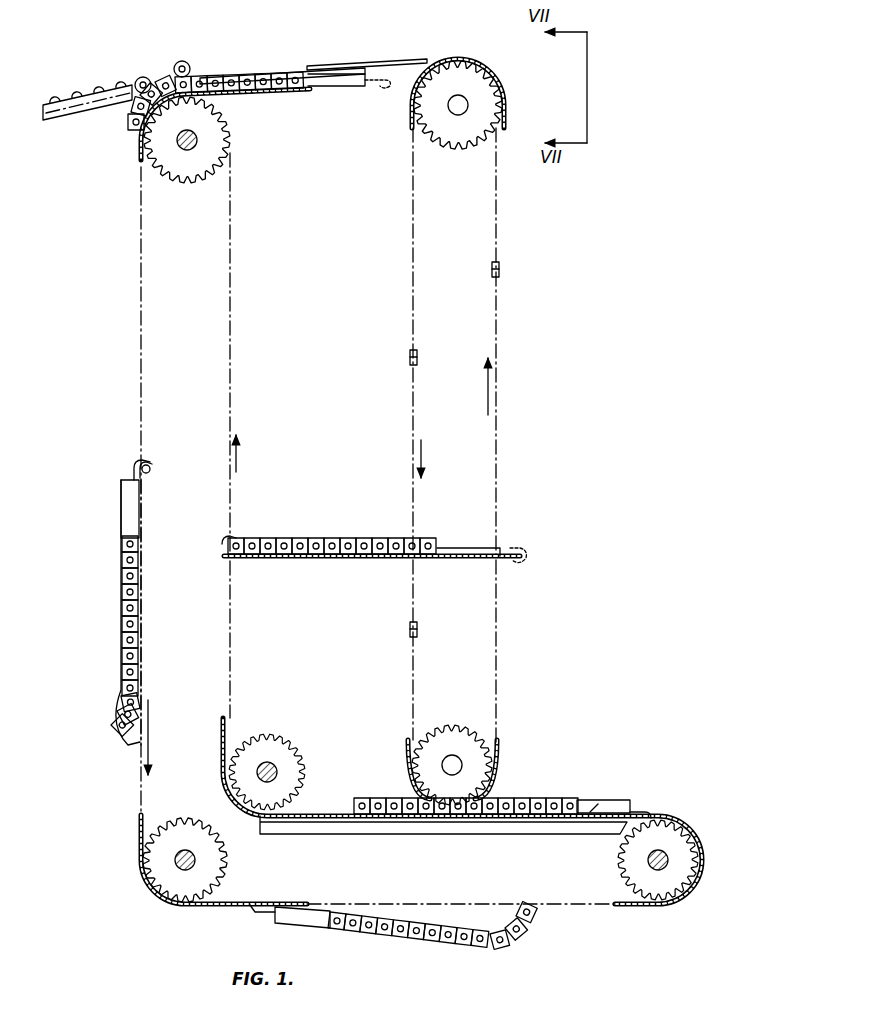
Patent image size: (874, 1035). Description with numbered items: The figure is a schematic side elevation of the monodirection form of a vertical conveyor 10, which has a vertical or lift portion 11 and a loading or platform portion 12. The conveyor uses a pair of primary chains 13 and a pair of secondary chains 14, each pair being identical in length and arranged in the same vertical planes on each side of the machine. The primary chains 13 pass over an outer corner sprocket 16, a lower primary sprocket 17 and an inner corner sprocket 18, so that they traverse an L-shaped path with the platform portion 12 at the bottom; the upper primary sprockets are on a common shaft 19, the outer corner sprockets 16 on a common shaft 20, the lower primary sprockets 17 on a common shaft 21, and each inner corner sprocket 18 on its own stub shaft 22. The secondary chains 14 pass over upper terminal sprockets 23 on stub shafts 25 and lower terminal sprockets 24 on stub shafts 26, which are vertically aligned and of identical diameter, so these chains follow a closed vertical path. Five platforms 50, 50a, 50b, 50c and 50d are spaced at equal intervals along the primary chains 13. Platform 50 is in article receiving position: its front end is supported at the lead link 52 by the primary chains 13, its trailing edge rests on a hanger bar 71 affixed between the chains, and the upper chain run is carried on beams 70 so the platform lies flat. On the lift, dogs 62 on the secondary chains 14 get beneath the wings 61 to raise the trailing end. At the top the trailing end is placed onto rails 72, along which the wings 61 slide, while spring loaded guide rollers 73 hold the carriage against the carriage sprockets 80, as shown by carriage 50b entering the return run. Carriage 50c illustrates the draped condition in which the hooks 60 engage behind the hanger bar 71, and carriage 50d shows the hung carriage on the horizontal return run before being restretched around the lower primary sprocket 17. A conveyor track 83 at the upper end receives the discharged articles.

The vertical conveyor 10 is at (512, 240).
The vertical or lift portion 11 is at (408, 266).
The loading or platform portion 12 is at (556, 905).
The primary chains 13 is at (234, 352).
The secondary chains 14 is at (500, 375).
The outer corner sprocket 16 is at (172, 830).
The lower primary sprocket 17 is at (662, 832).
The inner corner sprocket 18 is at (262, 742).
The common shaft 19 is at (182, 142).
The common shaft 20 is at (175, 862).
The common shaft 21 is at (670, 862).
The stub shaft 22 is at (272, 766).
The upper terminal sprocket 23 is at (450, 132).
The lower terminal sprocket 24 is at (470, 738).
The stub shaft 25 is at (462, 105).
The stub shaft 26 is at (456, 765).
The platform 50 is at (590, 800).
The platform 50a is at (322, 530).
The platform 50b is at (290, 98).
The platform 50c is at (118, 575).
The platform 50d is at (450, 940).
The lead link 52 is at (128, 736).
The hooks or support members 60 is at (148, 462).
The wings or ears 61 is at (300, 74).
The lifting dogs 62 is at (502, 270).
The beams 70 is at (322, 826).
The hanger bar 71 is at (150, 470).
The rails 72 is at (390, 60).
The guide rollers 73 is at (184, 61).
The carriage sprockets 80 is at (200, 132).
The conveyor track 83 is at (64, 112).